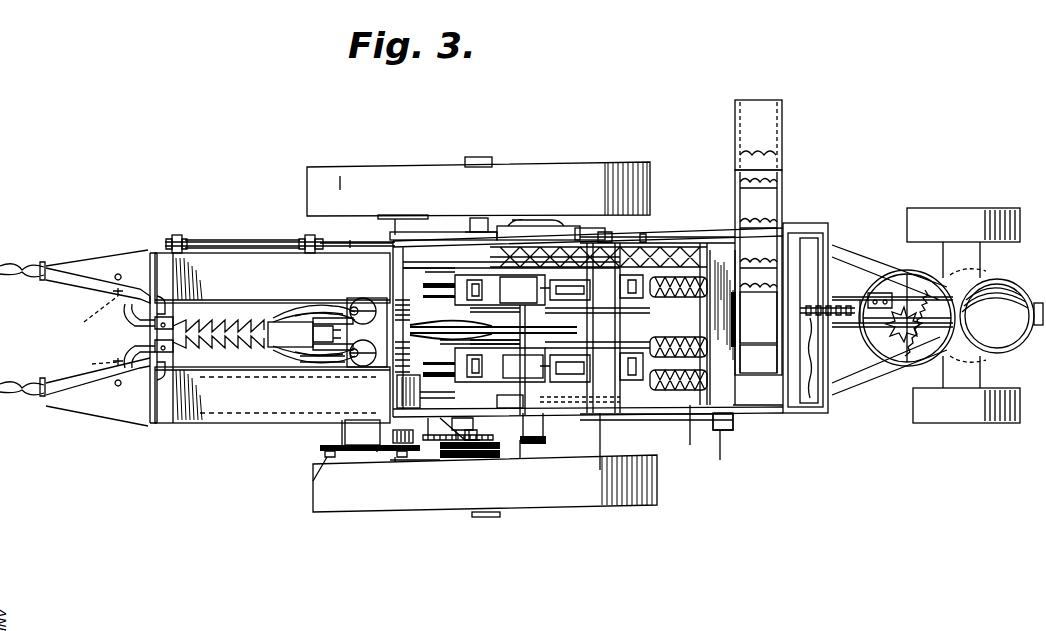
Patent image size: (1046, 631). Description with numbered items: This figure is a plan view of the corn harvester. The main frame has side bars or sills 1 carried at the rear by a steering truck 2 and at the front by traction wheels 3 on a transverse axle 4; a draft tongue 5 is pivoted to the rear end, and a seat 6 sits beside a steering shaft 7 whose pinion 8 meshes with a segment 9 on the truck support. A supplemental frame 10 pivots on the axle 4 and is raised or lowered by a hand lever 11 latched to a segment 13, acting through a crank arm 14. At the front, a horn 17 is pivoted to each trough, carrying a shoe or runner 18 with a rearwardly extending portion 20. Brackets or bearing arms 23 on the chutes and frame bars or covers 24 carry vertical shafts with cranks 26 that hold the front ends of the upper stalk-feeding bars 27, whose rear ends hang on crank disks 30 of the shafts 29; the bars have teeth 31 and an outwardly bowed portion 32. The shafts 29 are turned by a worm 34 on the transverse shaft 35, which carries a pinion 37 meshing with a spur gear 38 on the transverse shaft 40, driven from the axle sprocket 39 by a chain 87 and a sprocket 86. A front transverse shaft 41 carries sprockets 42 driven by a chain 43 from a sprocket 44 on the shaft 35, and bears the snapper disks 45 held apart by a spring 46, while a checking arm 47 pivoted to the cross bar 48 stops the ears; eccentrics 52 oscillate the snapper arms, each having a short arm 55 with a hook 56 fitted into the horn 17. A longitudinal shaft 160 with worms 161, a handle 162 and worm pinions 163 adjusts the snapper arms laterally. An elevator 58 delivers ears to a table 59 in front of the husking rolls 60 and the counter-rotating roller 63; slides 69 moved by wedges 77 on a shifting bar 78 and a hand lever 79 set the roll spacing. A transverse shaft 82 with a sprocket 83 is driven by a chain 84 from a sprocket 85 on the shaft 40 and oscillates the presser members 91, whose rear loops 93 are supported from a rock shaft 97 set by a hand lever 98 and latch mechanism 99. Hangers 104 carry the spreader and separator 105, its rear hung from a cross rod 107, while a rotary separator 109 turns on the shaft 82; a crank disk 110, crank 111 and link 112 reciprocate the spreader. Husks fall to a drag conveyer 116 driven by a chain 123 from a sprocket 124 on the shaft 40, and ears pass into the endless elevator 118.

The side bars or sills 1 is at (804, 226).
The steering truck 2 is at (992, 242).
The traction wheels 3 is at (547, 164).
The axle 4 is at (480, 218).
The draft tongue 5 is at (1038, 326).
The seat 6 is at (999, 348).
The steering shaft 7 is at (870, 330).
The pinion 8 is at (902, 322).
The segment 9 is at (930, 332).
The supplemental frame 10 is at (778, 414).
The hand lever 11 is at (810, 400).
The segment 13 is at (846, 306).
The crank arm 14 is at (812, 333).
The horn 17 is at (96, 262).
The shoe or runner 18 is at (22, 325).
The rearwardly extending portion of the shoe 20 is at (96, 272).
The brackets or bearing arms 23 is at (155, 253).
The frame bars or covers 24 is at (260, 300).
The cranks 26 is at (185, 300).
The upper stalk-holding and feeding bars 27 is at (200, 326).
The shafts 29 is at (362, 298).
The crank disks 30 is at (350, 302).
The teeth 31 is at (230, 322).
The bowed portion 32 is at (300, 314).
The worm 34 is at (406, 292).
The transverse shaft 35 is at (408, 330).
The pinion 37 is at (397, 462).
The spur gear 38 is at (430, 445).
The sprocket 39 is at (506, 458).
The transverse shaft 40 is at (460, 418).
The transverse shaft 41 is at (333, 430).
The sprockets 42 is at (300, 480).
The chain 43 is at (355, 240).
The sprocket 44 is at (416, 444).
The snapper disks 45 is at (298, 316).
The spring 46 is at (300, 332).
The checking arm 47 is at (312, 362).
The cross bar 48 is at (382, 215).
The eccentric 52 is at (361, 432).
The short arm 55 is at (134, 338).
The hook 56 is at (84, 320).
The elevator 58 is at (416, 384).
The table 59 is at (437, 398).
The snapping rolls 60 is at (690, 262).
The roller 63 is at (678, 247).
The slide 69 is at (733, 460).
The wedge 77 is at (734, 426).
The shifting bar 78 is at (636, 420).
The hand lever 79 is at (380, 452).
The transverse shaft 82 is at (518, 420).
The sprocket 83 is at (548, 444).
The chain 84 is at (480, 442).
The sprocket 85 is at (484, 458).
The sprocket 86 is at (448, 458).
The chain 87 is at (466, 460).
The presser members 91 is at (494, 366).
The loop 93 is at (604, 414).
The rock shaft 97 is at (688, 420).
The hand lever 98 is at (660, 247).
The latch mechanism 99 is at (657, 226).
The hangers 104 is at (545, 332).
The spreader and separator 105 is at (440, 340).
The cross rod 107 is at (580, 398).
The separator 109 is at (570, 228).
The crank disk 110 is at (522, 226).
The crank 111 is at (608, 164).
The link 112 is at (552, 220).
The drag conveyer 116 is at (716, 336).
The endless elevator 118 is at (765, 176).
The chain 123 is at (503, 166).
The sprocket 124 is at (433, 232).
The longitudinal shaft 160 is at (248, 237).
The worms 161 is at (210, 235).
The handle 162 is at (359, 180).
The worm pinions 163 is at (176, 229).